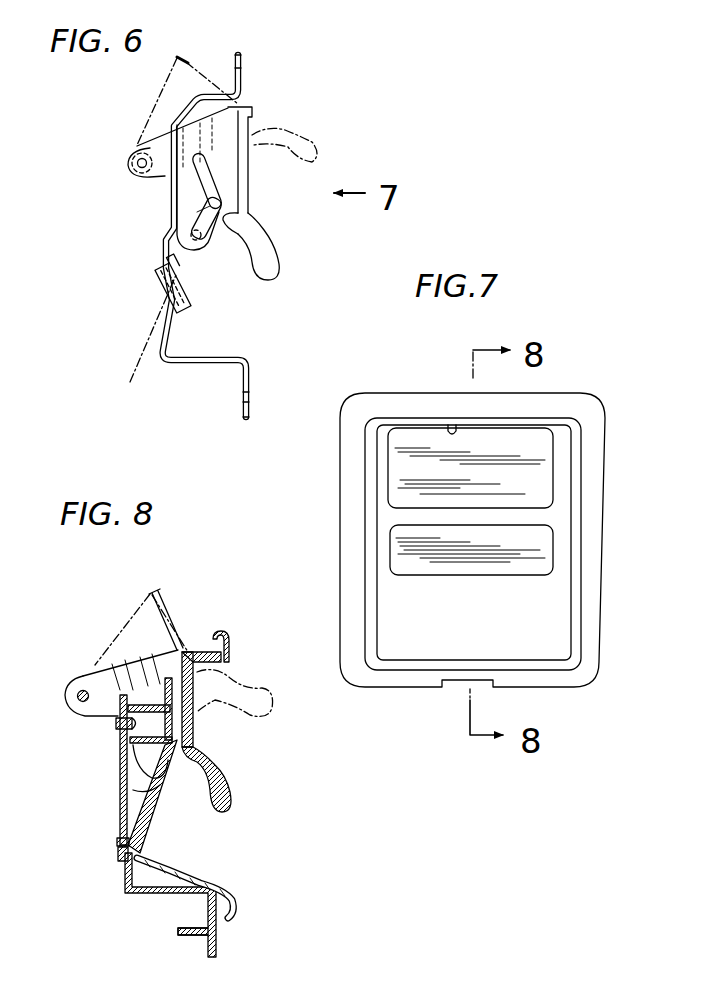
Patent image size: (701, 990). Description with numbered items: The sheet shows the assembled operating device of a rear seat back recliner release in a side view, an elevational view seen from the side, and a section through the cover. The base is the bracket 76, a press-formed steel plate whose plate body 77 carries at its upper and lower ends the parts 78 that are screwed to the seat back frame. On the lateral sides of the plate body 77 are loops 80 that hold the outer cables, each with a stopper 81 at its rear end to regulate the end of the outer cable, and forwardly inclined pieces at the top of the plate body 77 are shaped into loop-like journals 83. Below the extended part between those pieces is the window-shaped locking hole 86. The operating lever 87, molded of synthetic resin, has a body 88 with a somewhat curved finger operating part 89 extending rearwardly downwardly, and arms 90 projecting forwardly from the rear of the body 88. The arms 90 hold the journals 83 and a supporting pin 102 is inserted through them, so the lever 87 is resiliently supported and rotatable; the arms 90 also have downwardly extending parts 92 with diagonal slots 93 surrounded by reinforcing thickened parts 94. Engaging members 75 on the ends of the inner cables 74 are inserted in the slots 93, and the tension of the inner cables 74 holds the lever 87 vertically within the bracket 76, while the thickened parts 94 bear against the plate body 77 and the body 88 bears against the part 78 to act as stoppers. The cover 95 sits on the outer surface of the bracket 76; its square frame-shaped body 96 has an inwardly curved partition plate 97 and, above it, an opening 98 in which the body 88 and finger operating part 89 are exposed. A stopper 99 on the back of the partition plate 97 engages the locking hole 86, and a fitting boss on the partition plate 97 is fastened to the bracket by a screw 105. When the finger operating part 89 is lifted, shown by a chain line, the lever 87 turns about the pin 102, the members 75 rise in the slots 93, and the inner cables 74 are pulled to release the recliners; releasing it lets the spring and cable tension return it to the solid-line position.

In FIG. 6, the inner cable 74 is at (143, 345).
In FIG. 6, the engaging member 75 is at (190, 237).
In FIG. 6, the bracket 76 is at (165, 211).
In FIG. 8, the bracket 76 is at (200, 938).
In FIG. 6, the plate body 77 is at (178, 200).
In FIG. 8, the plate body 77 is at (132, 815).
In FIG. 6, the part to be screwed 78 is at (240, 56).
In FIG. 6, the loop 80 is at (166, 272).
In FIG. 6, the stopper 81 is at (190, 268).
In FIG. 6, the journal 83 is at (128, 152).
In FIG. 8, the locking hole 86 is at (117, 842).
In FIG. 6, the operating lever 87 is at (254, 116).
In FIG. 7, the operating lever 87 is at (538, 437).
In FIG. 8, the operating lever 87 is at (199, 718).
In FIG. 6, the body 88 is at (245, 185).
In FIG. 7, the body 88 is at (424, 433).
In FIG. 8, the body 88 is at (197, 745).
In FIG. 6, the finger operating part 89 is at (275, 262).
In FIG. 7, the finger operating part 89 is at (530, 545).
In FIG. 8, the finger operating part 89 is at (231, 796).
In FIG. 6, the arm 90 is at (150, 190).
In FIG. 8, the arm 90 is at (122, 673).
In FIG. 6, the downwardly extending part 92 is at (183, 242).
In FIG. 8, the downwardly extending part 92 is at (128, 797).
In FIG. 6, the diagonal slot 93 is at (206, 224).
In FIG. 8, the diagonal slot 93 is at (137, 760).
In FIG. 6, the thickened part 94 is at (226, 215).
In FIG. 7, the cover 95 is at (338, 489).
In FIG. 8, the cover 95 is at (225, 877).
In FIG. 7, the body 96 is at (355, 570).
In FIG. 8, the body 96 is at (228, 642).
In FIG. 8, the partition plate 97 is at (160, 877).
In FIG. 7, the opening 98 is at (455, 432).
In FIG. 8, the opening 98 is at (175, 654).
In FIG. 8, the stopper 99 is at (120, 860).
In FIG. 6, the supporting pin 102 is at (150, 172).
In FIG. 8, the supporting pin 102 is at (82, 689).
In FIG. 8, the screw 105 is at (115, 726).